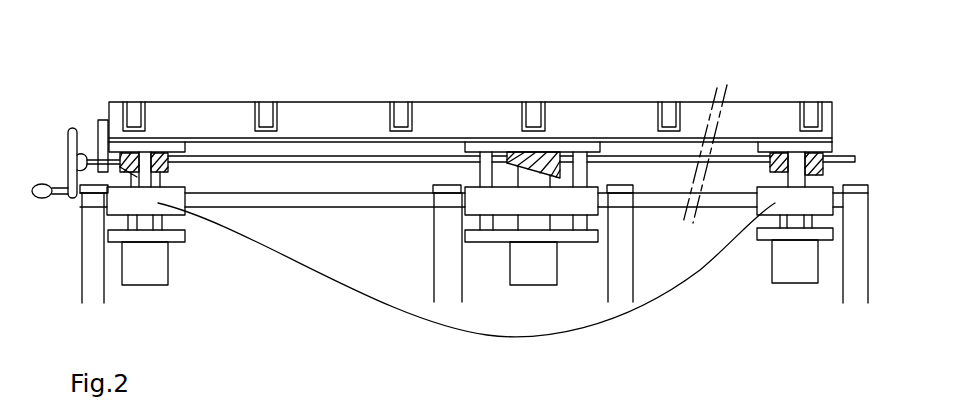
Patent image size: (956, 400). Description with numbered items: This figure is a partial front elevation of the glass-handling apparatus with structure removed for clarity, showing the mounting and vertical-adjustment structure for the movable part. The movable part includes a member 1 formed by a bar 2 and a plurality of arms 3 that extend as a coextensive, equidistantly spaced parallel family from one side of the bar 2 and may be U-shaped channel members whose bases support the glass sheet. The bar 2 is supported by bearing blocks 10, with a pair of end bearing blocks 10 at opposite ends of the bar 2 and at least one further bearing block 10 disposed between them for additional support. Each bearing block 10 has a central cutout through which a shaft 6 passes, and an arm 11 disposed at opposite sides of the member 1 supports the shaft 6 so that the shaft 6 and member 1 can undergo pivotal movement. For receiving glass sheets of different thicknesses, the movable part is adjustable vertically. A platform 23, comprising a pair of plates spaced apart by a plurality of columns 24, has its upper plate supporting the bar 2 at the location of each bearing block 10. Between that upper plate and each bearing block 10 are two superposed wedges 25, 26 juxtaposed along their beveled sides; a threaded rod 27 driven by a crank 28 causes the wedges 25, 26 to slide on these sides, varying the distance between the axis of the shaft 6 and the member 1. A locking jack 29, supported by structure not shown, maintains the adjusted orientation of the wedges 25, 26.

The member 1 is at (388, 35).
The bar 2 is at (367, 113).
The arms 3 is at (412, 118).
The shaft 6 is at (657, 192).
The bearing blocks 10 is at (537, 205).
The arm 11 is at (102, 290).
The platform 23 is at (174, 142).
The columns 24 is at (145, 160).
The wedge 25 is at (768, 156).
The wedge 26 is at (782, 175).
The threaded rod 27 is at (284, 154).
The crank 28 is at (68, 133).
The locking jack 29 is at (148, 280).